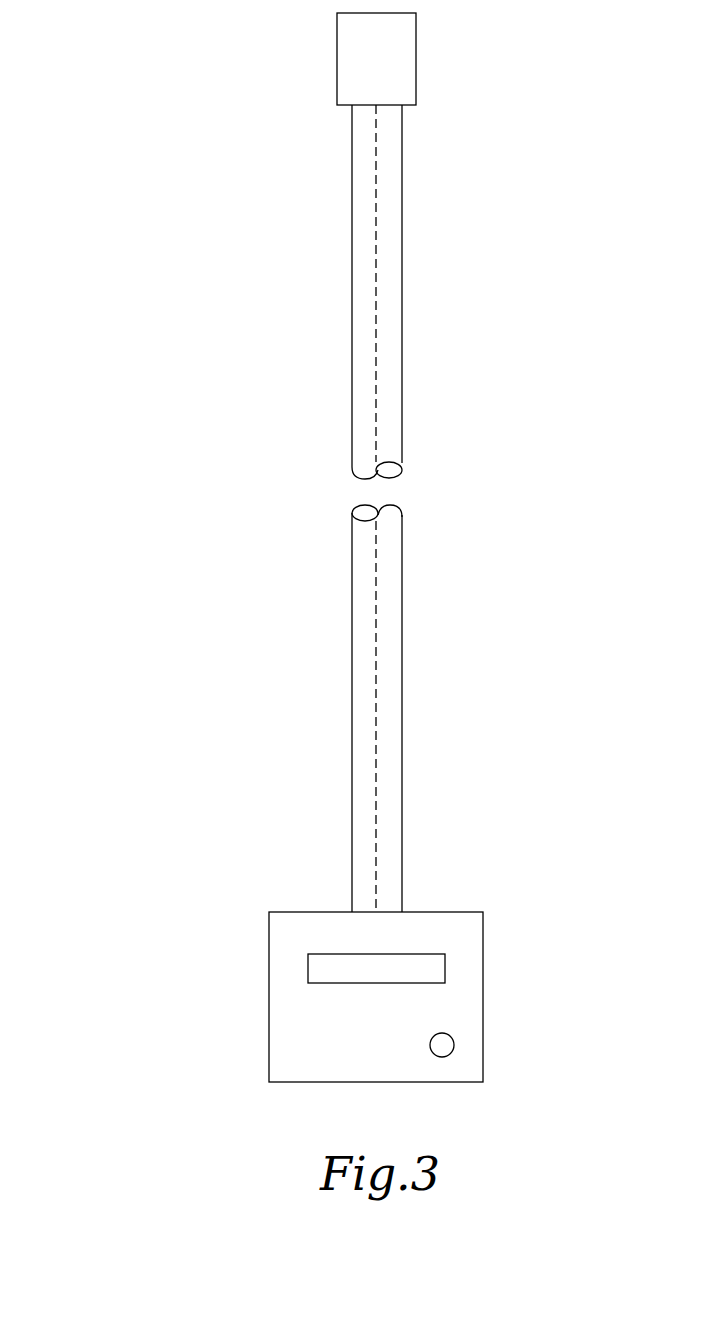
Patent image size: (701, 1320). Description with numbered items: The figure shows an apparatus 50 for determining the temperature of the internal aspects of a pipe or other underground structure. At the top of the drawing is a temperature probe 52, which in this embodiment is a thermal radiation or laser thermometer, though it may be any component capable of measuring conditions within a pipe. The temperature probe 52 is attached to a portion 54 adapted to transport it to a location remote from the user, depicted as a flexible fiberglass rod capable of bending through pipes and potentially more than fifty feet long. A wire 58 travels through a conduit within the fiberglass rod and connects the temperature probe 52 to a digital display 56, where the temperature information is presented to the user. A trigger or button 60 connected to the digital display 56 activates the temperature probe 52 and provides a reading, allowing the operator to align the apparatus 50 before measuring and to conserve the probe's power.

The apparatus 50 is at (150, 578).
The temperature probe 52 is at (345, 68).
The portion adapted to transport the temperature probe 54 is at (357, 312).
The digital display 56 is at (275, 977).
The wire 58 is at (377, 656).
The trigger or button 60 is at (454, 1040).